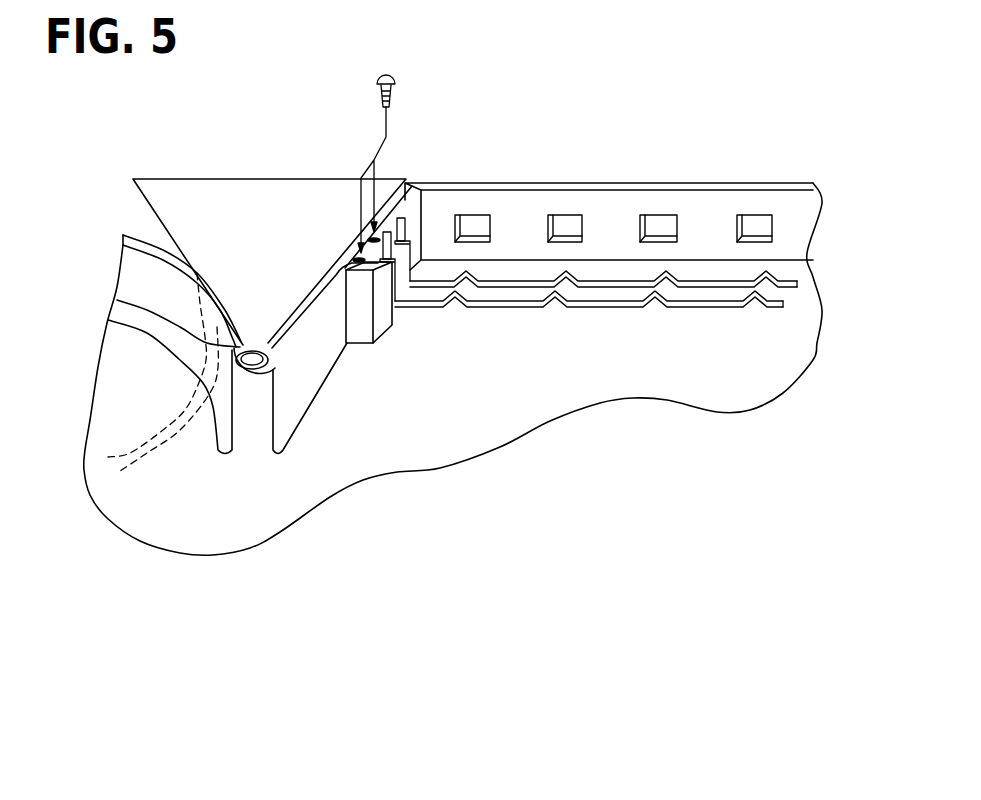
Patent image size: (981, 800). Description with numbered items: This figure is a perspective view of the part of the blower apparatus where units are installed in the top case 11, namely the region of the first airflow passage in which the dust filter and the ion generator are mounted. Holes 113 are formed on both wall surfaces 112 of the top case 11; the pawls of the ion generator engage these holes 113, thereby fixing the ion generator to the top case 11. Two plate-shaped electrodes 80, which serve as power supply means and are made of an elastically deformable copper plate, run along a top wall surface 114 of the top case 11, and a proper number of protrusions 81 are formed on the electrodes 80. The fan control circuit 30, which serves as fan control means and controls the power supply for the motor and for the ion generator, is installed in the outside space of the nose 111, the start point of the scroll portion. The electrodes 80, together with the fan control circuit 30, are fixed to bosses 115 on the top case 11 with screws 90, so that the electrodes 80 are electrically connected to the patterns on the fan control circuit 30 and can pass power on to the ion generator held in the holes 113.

The top case 11 is at (441, 473).
The fan control circuit 30 is at (263, 208).
The plate-shaped electrodes 80 is at (594, 302).
The protrusions 81 is at (656, 308).
The screws 90 is at (386, 76).
The nose 111 is at (117, 300).
The wall surfaces 112 is at (612, 213).
The holes 113 is at (477, 227).
The top wall surface 114 is at (345, 426).
The bosses 115 is at (362, 322).